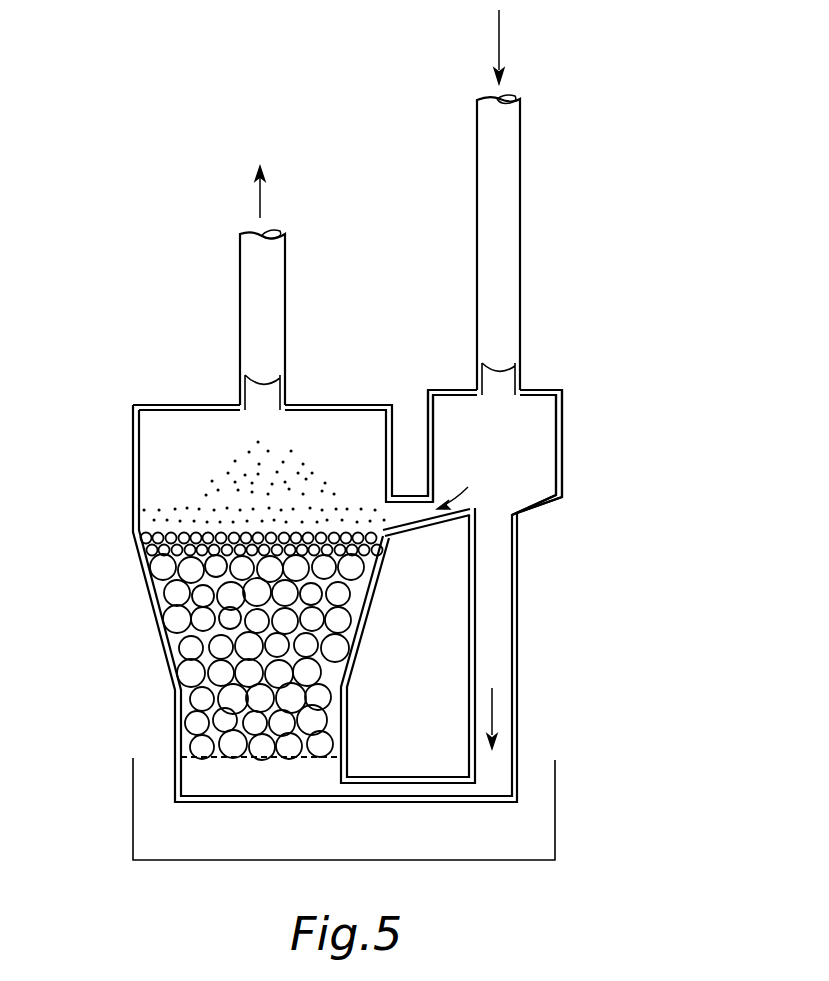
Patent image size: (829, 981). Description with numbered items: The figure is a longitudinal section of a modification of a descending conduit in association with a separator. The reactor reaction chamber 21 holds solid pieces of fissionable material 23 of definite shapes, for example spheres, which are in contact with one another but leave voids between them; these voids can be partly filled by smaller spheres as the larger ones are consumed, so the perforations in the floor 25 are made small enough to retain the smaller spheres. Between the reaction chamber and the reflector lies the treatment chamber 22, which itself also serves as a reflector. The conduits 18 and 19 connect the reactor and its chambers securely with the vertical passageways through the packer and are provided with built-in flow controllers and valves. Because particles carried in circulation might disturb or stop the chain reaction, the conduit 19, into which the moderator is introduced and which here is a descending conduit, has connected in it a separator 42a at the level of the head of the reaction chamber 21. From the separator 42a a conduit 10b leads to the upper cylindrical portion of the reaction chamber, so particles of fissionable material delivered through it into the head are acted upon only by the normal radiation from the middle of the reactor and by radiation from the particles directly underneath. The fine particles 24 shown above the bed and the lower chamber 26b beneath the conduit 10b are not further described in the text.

The conduit 18 is at (258, 298).
The conduit 19 is at (503, 180).
The reactor reaction chamber 21 is at (170, 432).
The treatment chamber 22 is at (148, 800).
The solid pieces of fissionable material 23 is at (188, 742).
The fine particles / dust 24 is at (228, 481).
The floor 25 is at (173, 755).
The conduit 10b is at (419, 514).
The lower chamber 26b is at (419, 787).
The separator 42a is at (545, 409).